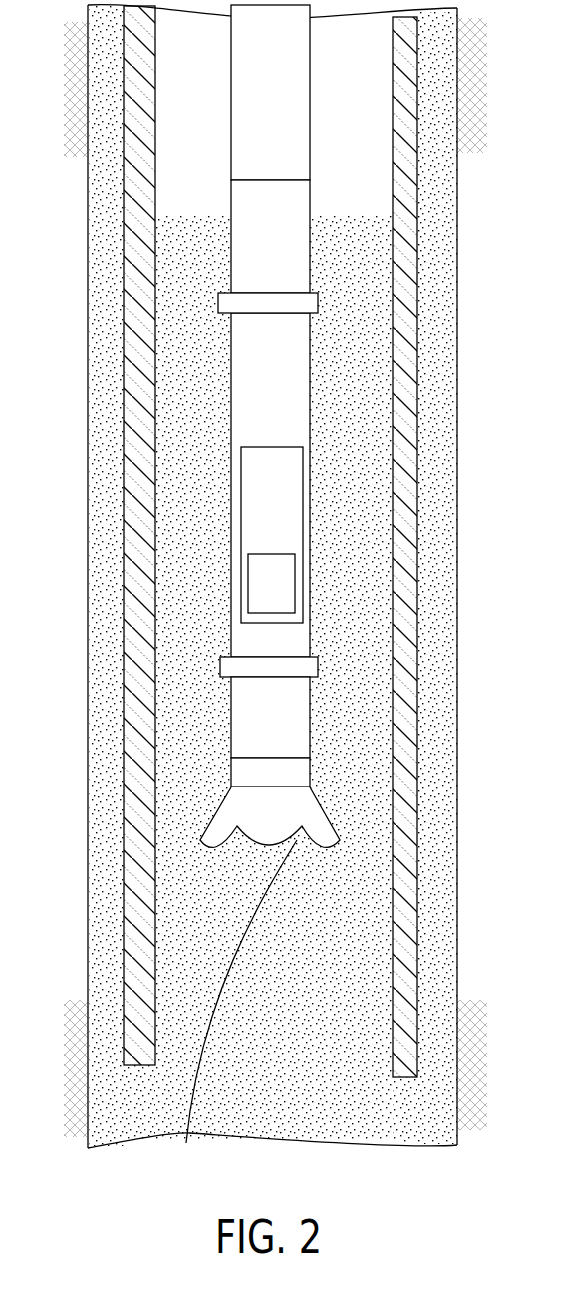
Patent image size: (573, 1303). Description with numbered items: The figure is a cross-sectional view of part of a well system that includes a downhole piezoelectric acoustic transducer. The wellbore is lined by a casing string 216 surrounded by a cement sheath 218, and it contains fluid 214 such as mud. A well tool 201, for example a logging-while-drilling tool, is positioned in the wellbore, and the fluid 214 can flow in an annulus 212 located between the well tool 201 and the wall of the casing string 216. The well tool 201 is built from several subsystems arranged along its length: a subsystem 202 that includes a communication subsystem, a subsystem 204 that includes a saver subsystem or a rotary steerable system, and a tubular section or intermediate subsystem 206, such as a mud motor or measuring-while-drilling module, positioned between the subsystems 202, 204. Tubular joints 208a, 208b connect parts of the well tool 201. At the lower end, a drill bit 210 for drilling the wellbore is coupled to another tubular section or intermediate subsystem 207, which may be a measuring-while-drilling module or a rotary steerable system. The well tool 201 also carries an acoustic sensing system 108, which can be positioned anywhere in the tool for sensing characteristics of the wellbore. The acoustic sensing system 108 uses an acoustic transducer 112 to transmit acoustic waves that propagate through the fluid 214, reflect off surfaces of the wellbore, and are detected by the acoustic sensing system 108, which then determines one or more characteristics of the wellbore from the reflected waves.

The acoustic sensing system 108 is at (303, 532).
The acoustic transducer 112 is at (295, 578).
The well tool 201 is at (231, 110).
The subsystem 202 is at (291, 198).
The subsystem 204 is at (248, 738).
The intermediate subsystem 206 is at (248, 378).
The intermediate subsystem 207 is at (300, 772).
The tubular joint 208a is at (218, 302).
The tubular joint 208b is at (220, 664).
The drill bit 210 is at (234, 1008).
The annulus 212 is at (163, 162).
The fluid 214 is at (375, 935).
The casing string 216 is at (136, 389).
The cement sheath 218 is at (110, 426).